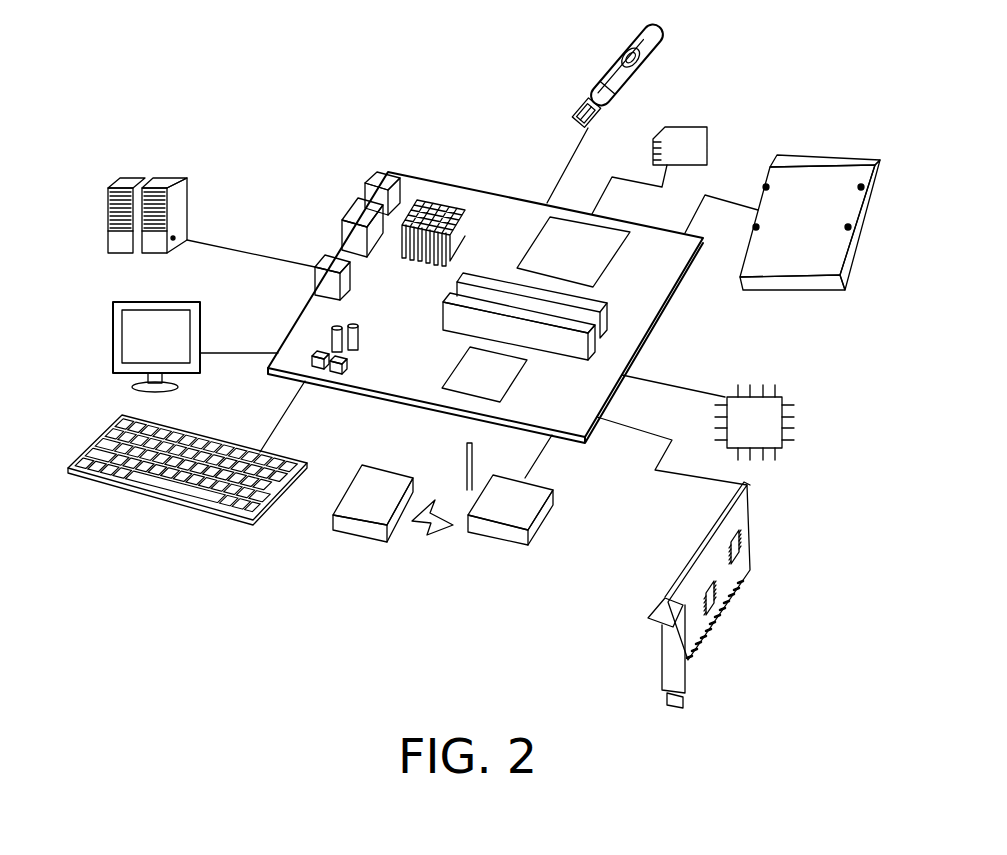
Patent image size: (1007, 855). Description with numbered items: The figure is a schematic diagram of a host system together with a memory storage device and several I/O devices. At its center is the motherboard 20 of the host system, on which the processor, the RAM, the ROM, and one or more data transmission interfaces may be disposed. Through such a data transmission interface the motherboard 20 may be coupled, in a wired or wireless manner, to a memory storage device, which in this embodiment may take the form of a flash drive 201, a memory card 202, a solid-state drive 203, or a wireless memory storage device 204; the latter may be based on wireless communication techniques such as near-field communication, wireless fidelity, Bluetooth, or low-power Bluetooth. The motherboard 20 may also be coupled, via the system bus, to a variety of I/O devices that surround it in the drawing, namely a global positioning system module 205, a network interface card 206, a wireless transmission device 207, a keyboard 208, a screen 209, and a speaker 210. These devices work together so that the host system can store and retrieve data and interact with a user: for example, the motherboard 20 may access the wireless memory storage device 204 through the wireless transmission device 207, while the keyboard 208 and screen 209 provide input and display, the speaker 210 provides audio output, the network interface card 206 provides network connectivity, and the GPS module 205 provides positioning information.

The motherboard 20 is at (488, 187).
The flash drive 201 is at (608, 67).
The memory card 202 is at (707, 138).
The solid-state drive (SSD) 203 is at (826, 153).
The wireless memory storage device 204 is at (353, 480).
The global positioning system (GPS) module 205 is at (787, 420).
The network interface card 206 is at (753, 542).
The wireless transmission device 207 is at (543, 525).
The keyboard 208 is at (188, 508).
The screen 209 is at (113, 353).
The speaker 210 is at (108, 240).